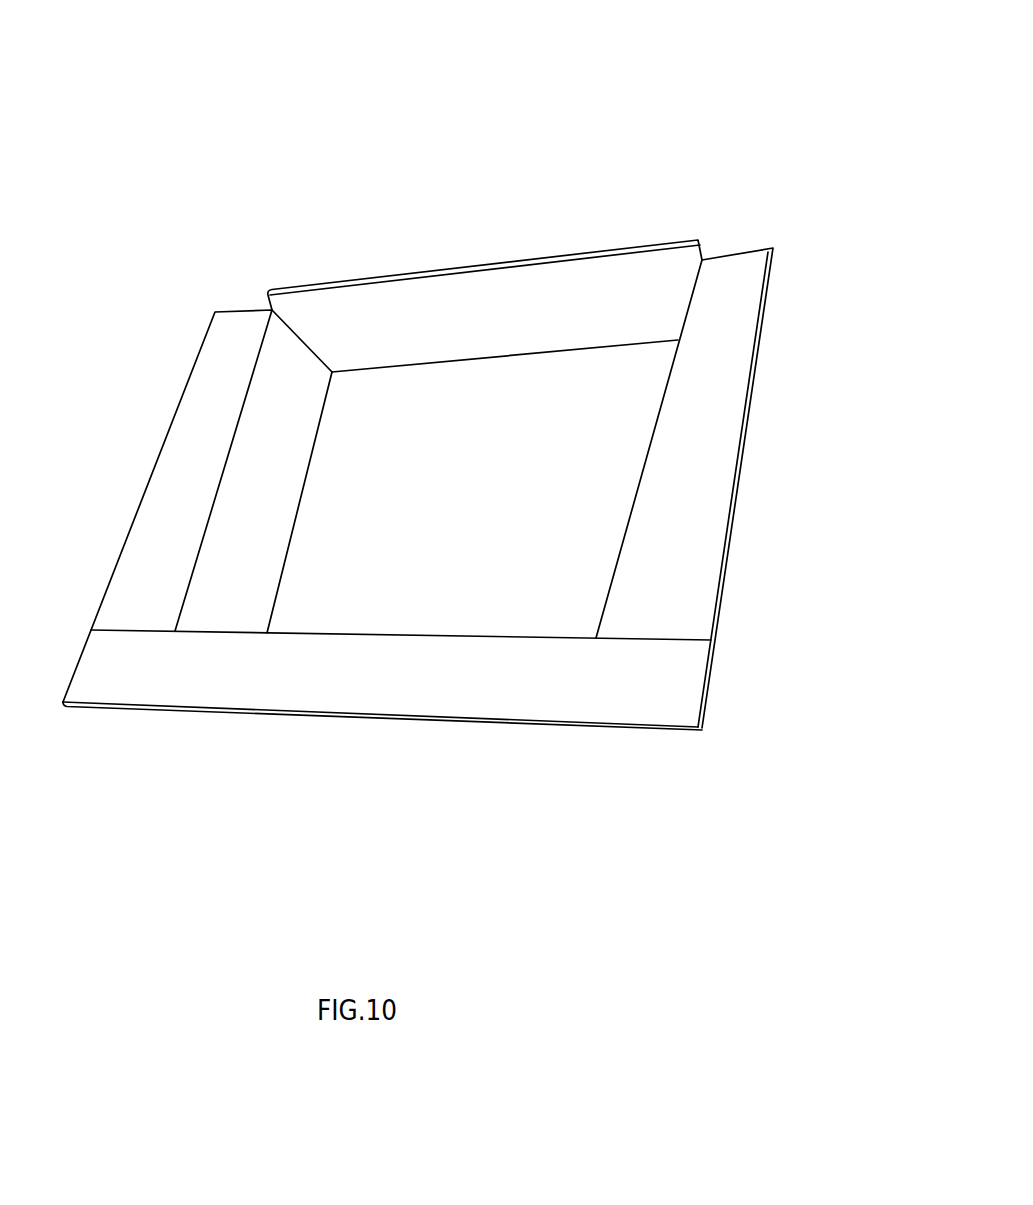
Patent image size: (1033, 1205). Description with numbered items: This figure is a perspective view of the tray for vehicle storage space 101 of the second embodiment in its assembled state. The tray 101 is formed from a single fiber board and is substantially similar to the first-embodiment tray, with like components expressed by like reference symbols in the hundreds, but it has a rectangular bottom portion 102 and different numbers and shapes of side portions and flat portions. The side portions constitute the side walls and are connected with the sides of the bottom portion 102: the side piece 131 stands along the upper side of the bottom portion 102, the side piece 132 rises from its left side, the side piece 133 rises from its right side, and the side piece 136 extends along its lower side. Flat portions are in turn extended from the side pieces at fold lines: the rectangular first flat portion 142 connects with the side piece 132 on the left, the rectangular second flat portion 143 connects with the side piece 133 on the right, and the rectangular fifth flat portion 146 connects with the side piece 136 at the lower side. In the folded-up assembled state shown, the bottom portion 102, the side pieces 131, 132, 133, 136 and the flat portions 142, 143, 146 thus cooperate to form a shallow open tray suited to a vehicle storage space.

The tray for vehicle storage space 101 is at (717, 48).
The bottom portion 102 is at (467, 417).
The side piece 131 is at (408, 345).
The side piece 132 is at (267, 460).
The side piece 133 is at (640, 478).
The side piece 136 is at (428, 635).
The first flat portion 142 is at (168, 477).
The second flat portion 143 is at (715, 492).
The fifth flat portion 146 is at (348, 693).